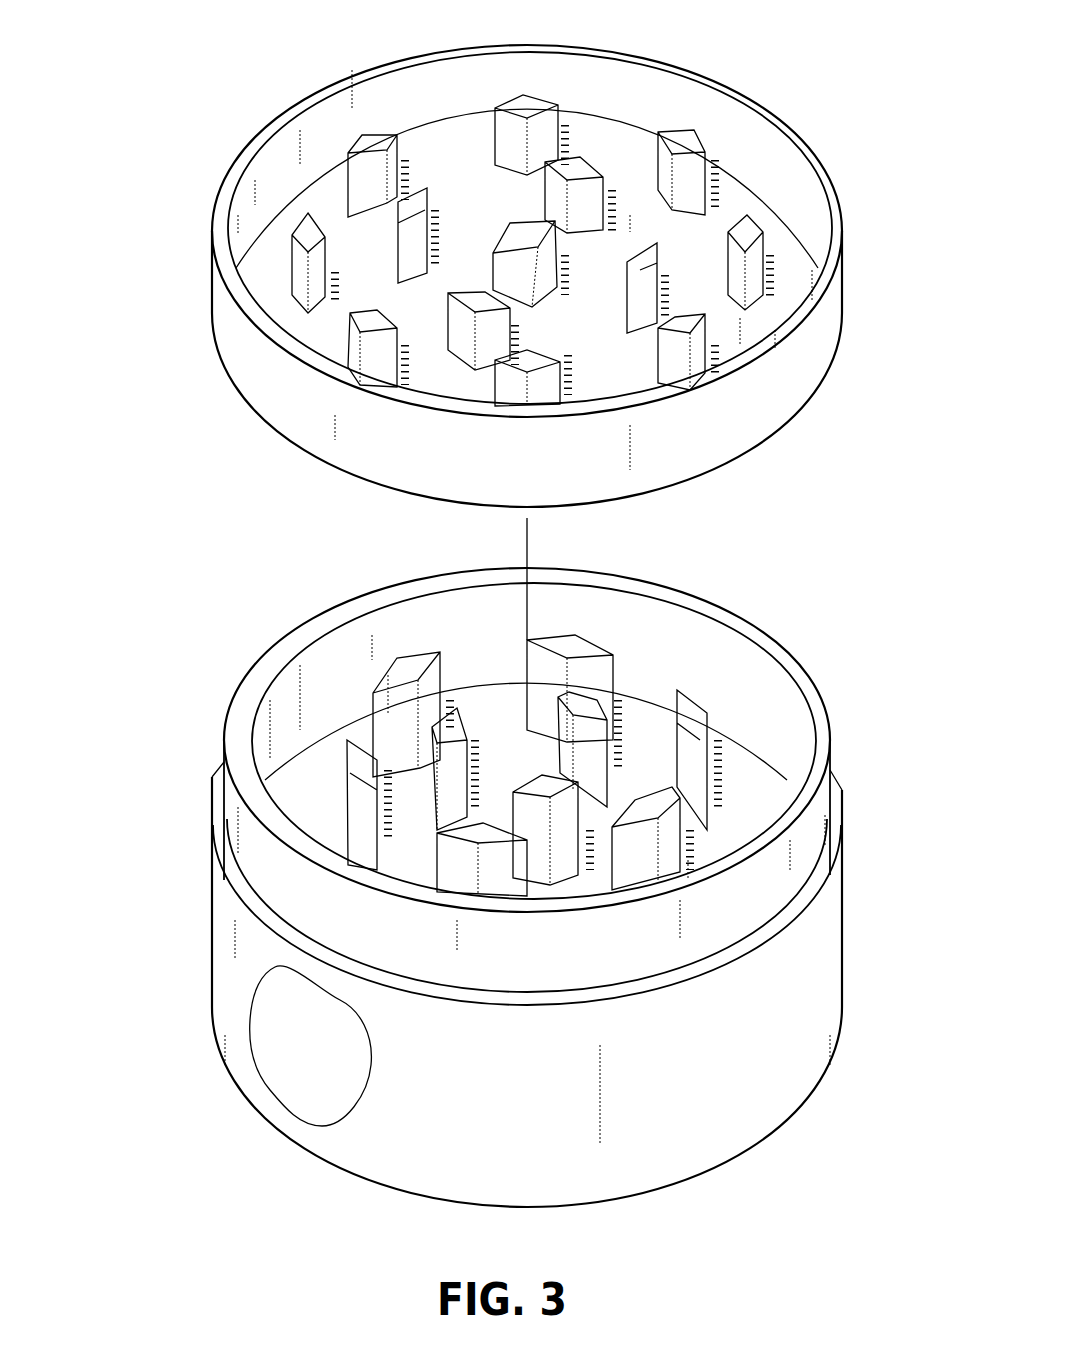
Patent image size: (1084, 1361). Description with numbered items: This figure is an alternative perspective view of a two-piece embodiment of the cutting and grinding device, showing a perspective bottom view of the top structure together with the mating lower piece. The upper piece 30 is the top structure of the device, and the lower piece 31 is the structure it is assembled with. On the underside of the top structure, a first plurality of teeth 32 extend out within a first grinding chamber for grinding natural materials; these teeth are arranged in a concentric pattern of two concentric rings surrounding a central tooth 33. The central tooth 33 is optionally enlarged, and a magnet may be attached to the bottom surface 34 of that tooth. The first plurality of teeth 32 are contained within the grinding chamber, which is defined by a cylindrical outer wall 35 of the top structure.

The upper grinder portion 30 is at (442, 256).
The lower grinder portion 31 is at (882, 886).
The first plurality of teeth 32 is at (545, 133).
The central tooth 33 is at (583, 156).
The bottom surface 34 is at (533, 232).
The cylindrical outer wall 35 is at (278, 385).